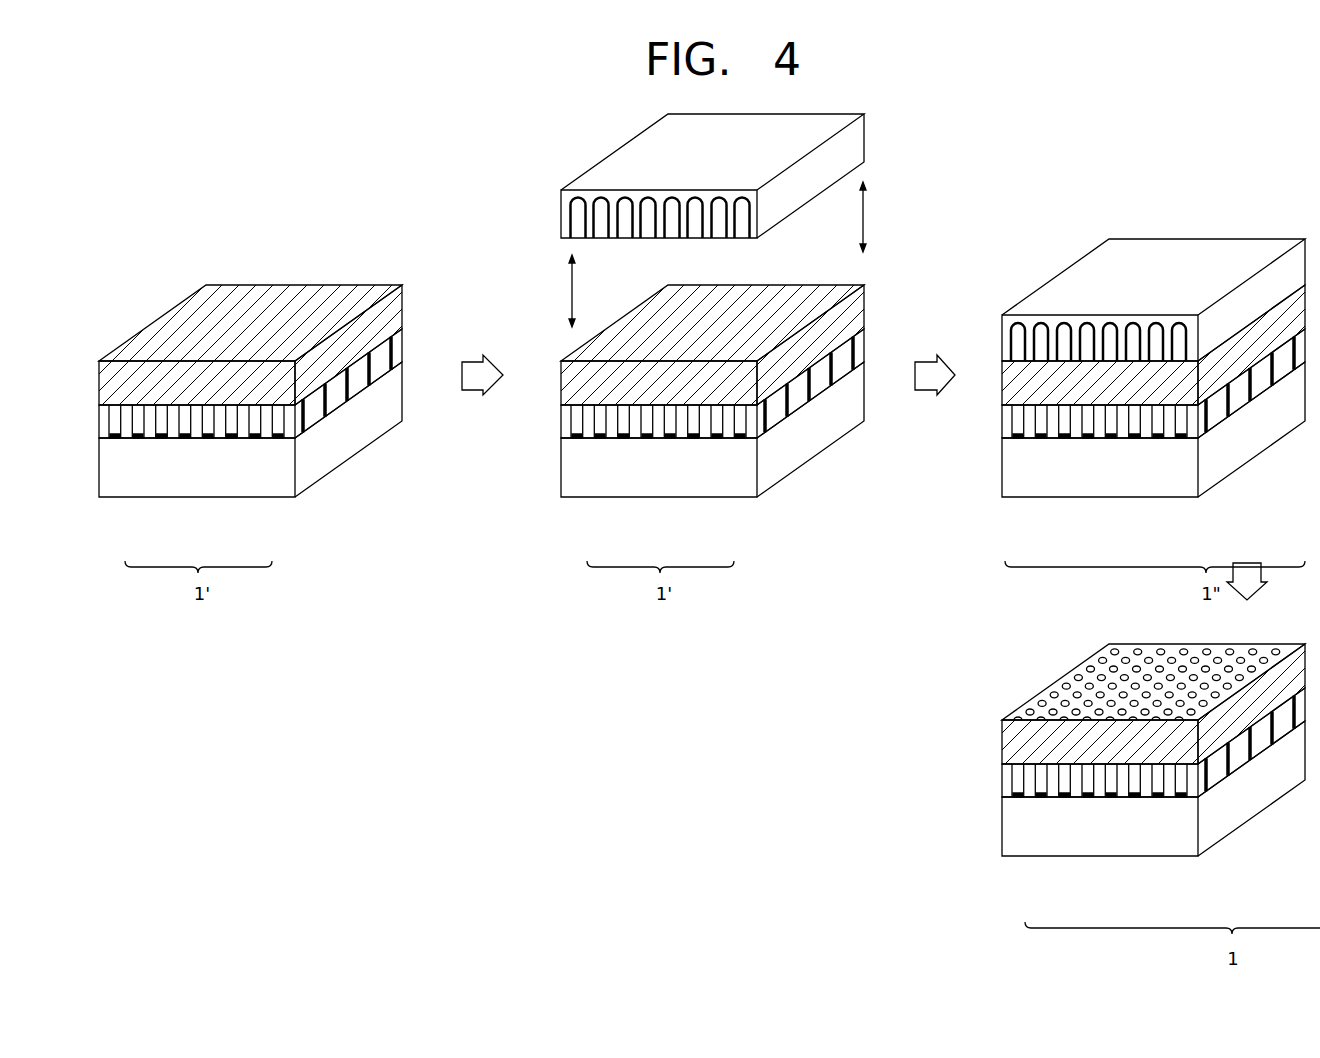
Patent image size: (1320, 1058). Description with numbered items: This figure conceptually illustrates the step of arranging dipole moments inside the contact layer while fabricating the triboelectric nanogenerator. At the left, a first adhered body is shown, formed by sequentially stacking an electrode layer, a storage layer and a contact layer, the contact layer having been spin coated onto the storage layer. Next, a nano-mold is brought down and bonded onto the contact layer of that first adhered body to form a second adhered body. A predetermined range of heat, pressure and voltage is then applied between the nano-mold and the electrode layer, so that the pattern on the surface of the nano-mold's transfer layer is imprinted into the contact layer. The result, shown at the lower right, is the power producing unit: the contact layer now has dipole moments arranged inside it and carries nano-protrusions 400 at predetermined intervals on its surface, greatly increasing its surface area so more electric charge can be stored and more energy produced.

The nano-protrusions 400 is at (1153, 784).